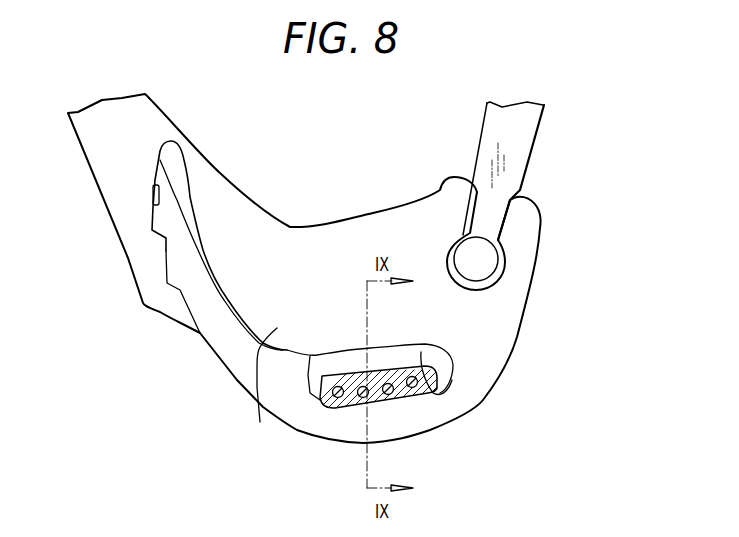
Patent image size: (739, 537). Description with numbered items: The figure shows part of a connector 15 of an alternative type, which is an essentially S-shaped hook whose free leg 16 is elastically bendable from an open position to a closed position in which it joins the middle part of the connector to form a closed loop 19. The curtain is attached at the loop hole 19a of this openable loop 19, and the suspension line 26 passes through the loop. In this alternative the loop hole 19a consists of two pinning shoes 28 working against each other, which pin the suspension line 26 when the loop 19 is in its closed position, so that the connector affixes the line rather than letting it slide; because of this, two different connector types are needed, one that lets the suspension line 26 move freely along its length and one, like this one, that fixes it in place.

The connector 15 is at (552, 160).
The free leg 16 is at (228, 346).
The loop 19 is at (284, 325).
The loop hole 19a is at (319, 401).
The suspension line 26 is at (400, 402).
The pinning shoe 28 is at (423, 353).